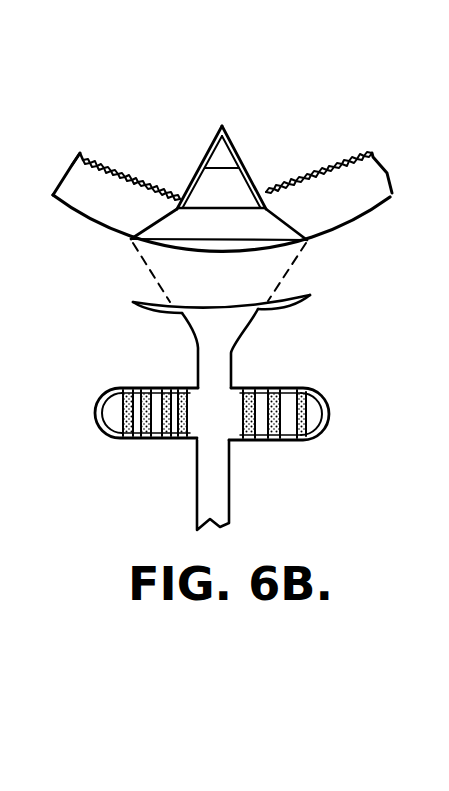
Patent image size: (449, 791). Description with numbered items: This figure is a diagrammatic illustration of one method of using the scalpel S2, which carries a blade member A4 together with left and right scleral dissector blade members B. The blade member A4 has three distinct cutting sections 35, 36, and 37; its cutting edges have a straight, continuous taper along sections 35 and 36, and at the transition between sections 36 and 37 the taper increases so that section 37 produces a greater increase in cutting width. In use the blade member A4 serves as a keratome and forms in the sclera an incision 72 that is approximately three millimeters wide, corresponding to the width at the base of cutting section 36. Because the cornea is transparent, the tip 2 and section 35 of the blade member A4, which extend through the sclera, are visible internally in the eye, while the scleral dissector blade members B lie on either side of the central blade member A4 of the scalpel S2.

The tip 2 is at (224, 125).
The cutting section 35 is at (213, 153).
The cutting section 36 is at (230, 192).
The cutting section 37 is at (190, 223).
The incision 72 is at (163, 215).
The blade member A4 is at (244, 146).
The scalpel S2 is at (256, 338).
The scleral dissector blade members B is at (128, 440).